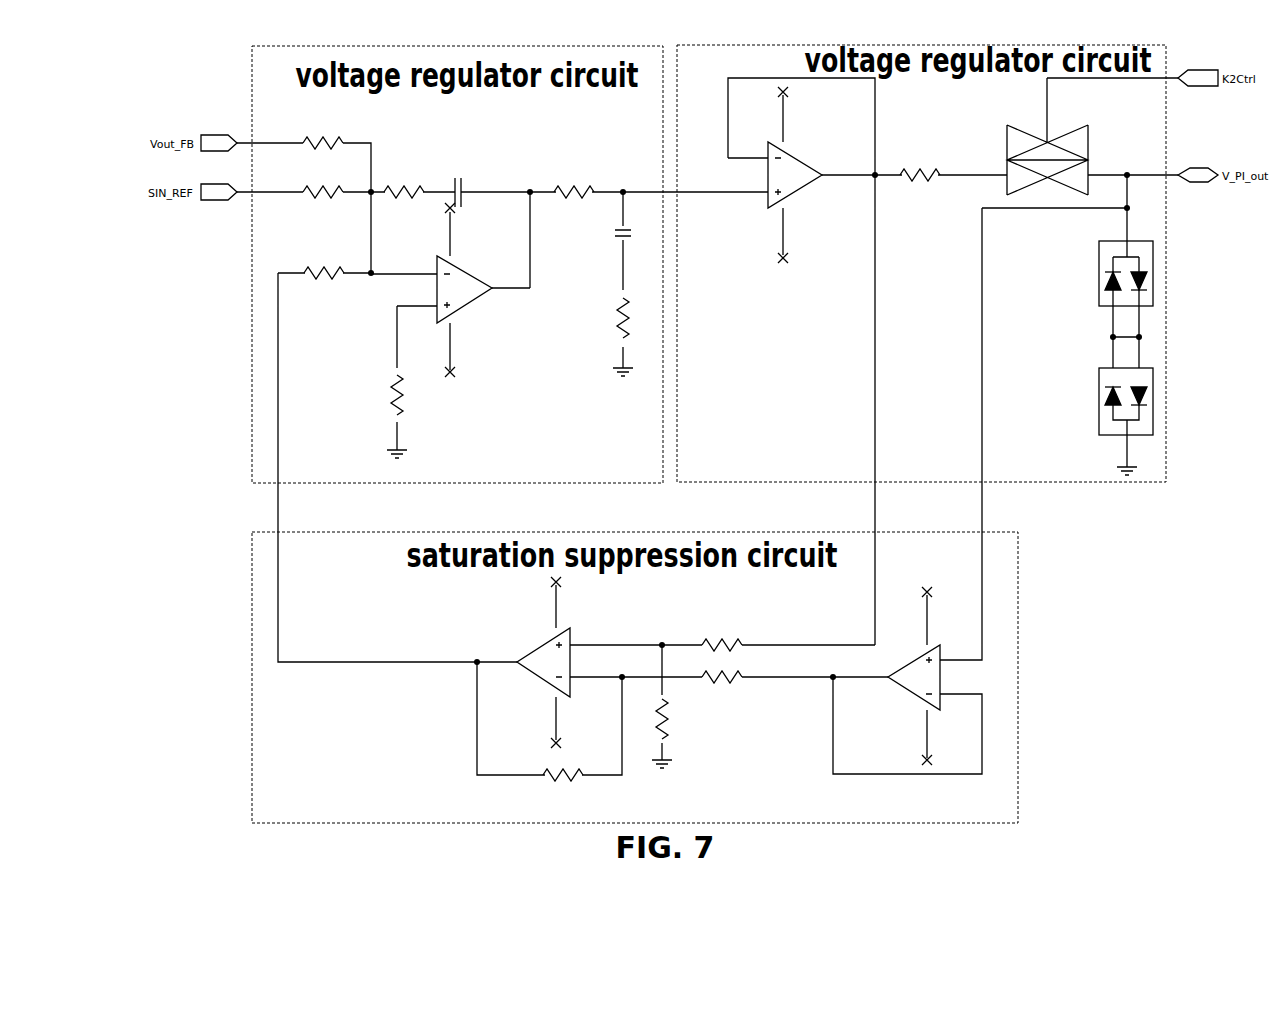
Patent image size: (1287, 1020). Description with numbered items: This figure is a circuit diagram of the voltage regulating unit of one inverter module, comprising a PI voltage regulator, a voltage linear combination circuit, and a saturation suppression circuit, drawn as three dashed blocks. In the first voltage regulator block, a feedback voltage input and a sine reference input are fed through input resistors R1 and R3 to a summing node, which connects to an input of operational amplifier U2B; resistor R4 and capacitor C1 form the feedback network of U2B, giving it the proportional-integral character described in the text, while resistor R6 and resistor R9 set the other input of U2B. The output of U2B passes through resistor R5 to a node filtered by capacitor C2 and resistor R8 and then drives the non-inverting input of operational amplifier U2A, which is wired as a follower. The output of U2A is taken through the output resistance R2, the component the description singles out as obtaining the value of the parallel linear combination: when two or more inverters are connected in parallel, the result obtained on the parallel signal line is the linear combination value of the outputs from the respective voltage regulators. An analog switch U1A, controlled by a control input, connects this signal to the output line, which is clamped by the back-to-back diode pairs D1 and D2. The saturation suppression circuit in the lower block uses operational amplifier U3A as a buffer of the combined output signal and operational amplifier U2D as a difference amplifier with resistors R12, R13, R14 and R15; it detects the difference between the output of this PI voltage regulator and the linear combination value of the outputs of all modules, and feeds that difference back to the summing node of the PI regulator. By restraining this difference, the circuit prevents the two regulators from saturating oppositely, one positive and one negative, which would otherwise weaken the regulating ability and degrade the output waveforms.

The resistor R1 10k R1 is at (321, 133).
The resistor R3 10k R3 is at (321, 199).
The resistor R4 100k R4 is at (405, 193).
The capacitor C1 0.01u C1 is at (476, 188).
The resistor R5 100k R5 is at (571, 174).
The capacitor C2 0.1u C2 is at (607, 243).
The resistor R8 470 R8 is at (606, 320).
The op-amp U2B LM324 U2B is at (472, 288).
The resistor R9 215k R9 is at (387, 385).
The resistor R6 10k R6 is at (322, 276).
The op-amp U2A LM324 U2A is at (803, 173).
The output resistance R2 is at (915, 173).
The analog switch U1A 14066 U1A is at (1063, 146).
The diode pair D1 is at (1114, 273).
The diode pair D2 is at (1114, 395).
The op-amp U2D LM324 U2D is at (549, 665).
The resistor R12 10k R12 is at (719, 632).
The resistor R13 10k R13 is at (719, 686).
The resistor R14 10k R14 is at (652, 717).
The resistor R15 10k R15 is at (559, 781).
The op-amp U3A LM324 U3A is at (920, 682).